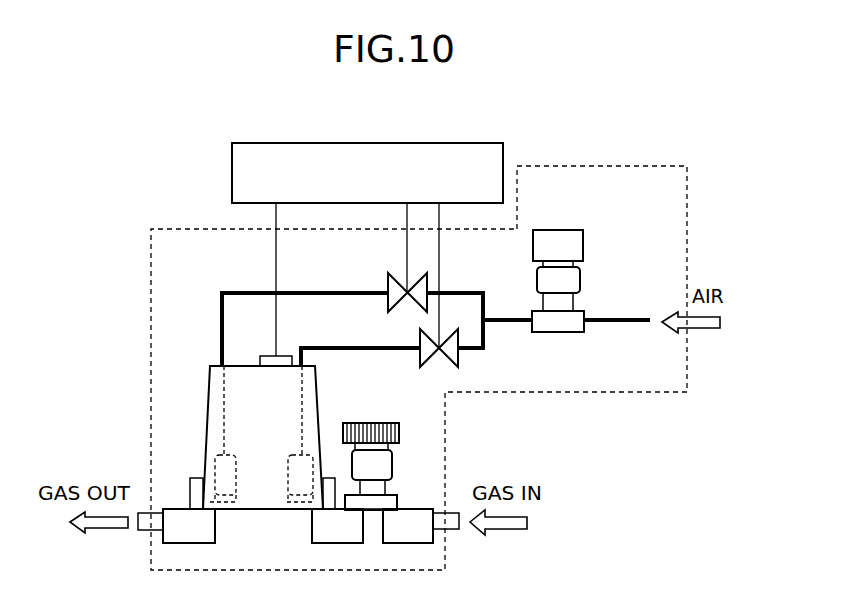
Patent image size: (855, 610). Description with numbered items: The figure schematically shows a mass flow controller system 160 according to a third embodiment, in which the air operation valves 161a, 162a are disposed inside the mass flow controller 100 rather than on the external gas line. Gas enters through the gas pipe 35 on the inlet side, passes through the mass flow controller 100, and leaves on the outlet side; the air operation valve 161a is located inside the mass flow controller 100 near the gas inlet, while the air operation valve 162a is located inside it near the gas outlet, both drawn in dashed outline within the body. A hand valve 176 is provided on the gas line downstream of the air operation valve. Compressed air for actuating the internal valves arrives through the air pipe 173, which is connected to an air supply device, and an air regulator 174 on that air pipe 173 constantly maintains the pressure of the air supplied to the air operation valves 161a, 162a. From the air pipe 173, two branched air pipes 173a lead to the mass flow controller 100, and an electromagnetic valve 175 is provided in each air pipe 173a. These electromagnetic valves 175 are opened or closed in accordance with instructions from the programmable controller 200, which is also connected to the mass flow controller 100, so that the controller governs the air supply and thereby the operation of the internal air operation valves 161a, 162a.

The programmable controller 200 is at (473, 143).
The mass flow controller system 160 is at (652, 166).
The air pipes 173a is at (465, 345).
The electromagnetic valve 175 is at (420, 342).
The air regulator 174 is at (557, 229).
The air pipe 173 is at (618, 311).
The mass flow controller 100 is at (285, 461).
The air operation valve 162a is at (221, 458).
The air operation valve 161a is at (305, 458).
The hand valve 176 is at (395, 423).
The gas pipe 35 is at (452, 530).